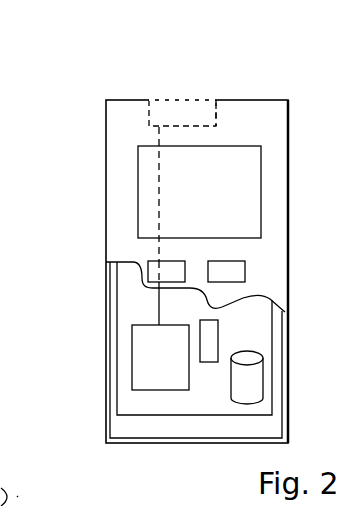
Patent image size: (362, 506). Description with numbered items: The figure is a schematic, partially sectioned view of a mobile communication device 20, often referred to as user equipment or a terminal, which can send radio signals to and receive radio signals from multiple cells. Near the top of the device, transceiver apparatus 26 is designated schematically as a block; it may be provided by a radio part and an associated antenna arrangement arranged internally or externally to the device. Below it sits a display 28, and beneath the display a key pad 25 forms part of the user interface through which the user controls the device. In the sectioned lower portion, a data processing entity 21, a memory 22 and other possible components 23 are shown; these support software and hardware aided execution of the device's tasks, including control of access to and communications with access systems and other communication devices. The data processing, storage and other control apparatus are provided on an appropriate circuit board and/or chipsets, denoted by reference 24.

The communication device 20 is at (106, 130).
The data processing entity 21 is at (138, 347).
The memory 22 is at (243, 387).
The other possible components 23 is at (210, 328).
The circuit board and/or chipsets 24 is at (133, 404).
The key pad 25 is at (150, 266).
The transceiver apparatus 26 is at (205, 112).
The display 28 is at (148, 183).